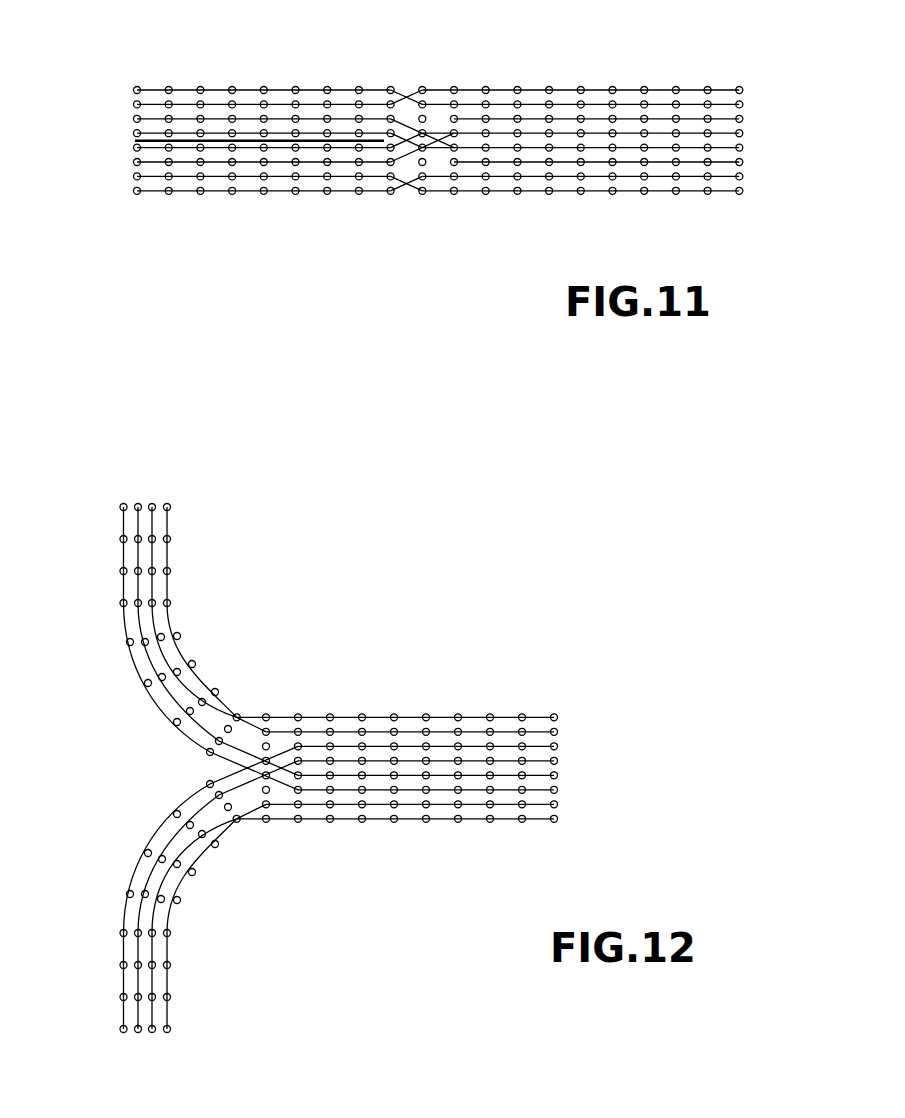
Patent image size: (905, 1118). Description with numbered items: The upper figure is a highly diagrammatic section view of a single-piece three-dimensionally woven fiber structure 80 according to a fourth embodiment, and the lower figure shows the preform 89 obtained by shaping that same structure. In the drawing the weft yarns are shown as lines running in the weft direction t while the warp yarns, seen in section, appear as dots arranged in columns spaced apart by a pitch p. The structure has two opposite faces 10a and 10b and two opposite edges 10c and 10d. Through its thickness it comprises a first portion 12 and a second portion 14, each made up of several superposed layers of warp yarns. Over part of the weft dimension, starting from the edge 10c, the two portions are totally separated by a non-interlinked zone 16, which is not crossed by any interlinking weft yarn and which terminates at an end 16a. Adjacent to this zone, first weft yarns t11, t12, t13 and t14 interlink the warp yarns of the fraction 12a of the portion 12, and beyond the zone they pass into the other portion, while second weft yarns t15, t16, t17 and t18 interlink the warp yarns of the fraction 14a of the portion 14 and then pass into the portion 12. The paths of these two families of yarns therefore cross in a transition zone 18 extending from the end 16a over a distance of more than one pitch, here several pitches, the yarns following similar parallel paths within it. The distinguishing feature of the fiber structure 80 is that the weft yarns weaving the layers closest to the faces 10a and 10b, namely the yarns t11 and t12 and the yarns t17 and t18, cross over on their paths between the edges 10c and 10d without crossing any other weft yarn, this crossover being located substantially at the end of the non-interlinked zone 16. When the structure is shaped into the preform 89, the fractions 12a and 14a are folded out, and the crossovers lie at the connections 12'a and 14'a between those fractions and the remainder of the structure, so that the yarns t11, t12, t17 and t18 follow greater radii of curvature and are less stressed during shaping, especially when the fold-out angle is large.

In FIG. 11, the face 10a is at (310, 80).
In FIG. 11, the face 10b is at (295, 200).
In FIG. 11, the edge 10c is at (104, 163).
In FIG. 11, the edge 10d is at (762, 137).
In FIG. 11, the portion 12 is at (464, 112).
In FIG. 12, the portion 12 is at (419, 739).
In FIG. 11, the fraction 12a is at (341, 97).
In FIG. 12, the fraction 12a is at (153, 551).
In FIG. 12, the connection 12'a is at (266, 661).
In FIG. 11, the portion 14 is at (464, 169).
In FIG. 12, the portion 14 is at (419, 796).
In FIG. 11, the fraction 14a is at (307, 173).
In FIG. 12, the fraction 14a is at (155, 977).
In FIG. 12, the connection 14'a is at (266, 878).
In FIG. 11, the non-interlinked zone 16 is at (150, 140).
In FIG. 11, the end of the non-interlinked zone 16a is at (383, 140).
In FIG. 11, the transition zone 18 is at (487, 203).
In FIG. 11, the fiber structure 80 is at (572, 62).
In FIG. 12, the multilayer woven fabric 89 is at (304, 679).
In FIG. 11, the weft direction t is at (410, 30).
In FIG. 11, the pitch p is at (493, 72).
In FIG. 11, the weft yarn t11 is at (153, 89).
In FIG. 11, the weft yarn t12 is at (188, 104).
In FIG. 11, the weft yarn t13 is at (220, 118).
In FIG. 11, the weft yarn t14 is at (257, 133).
In FIG. 11, the weft yarn t15 is at (257, 149).
In FIG. 11, the weft yarn t16 is at (220, 163).
In FIG. 11, the weft yarn t17 is at (188, 178).
In FIG. 11, the weft yarn t18 is at (152, 192).